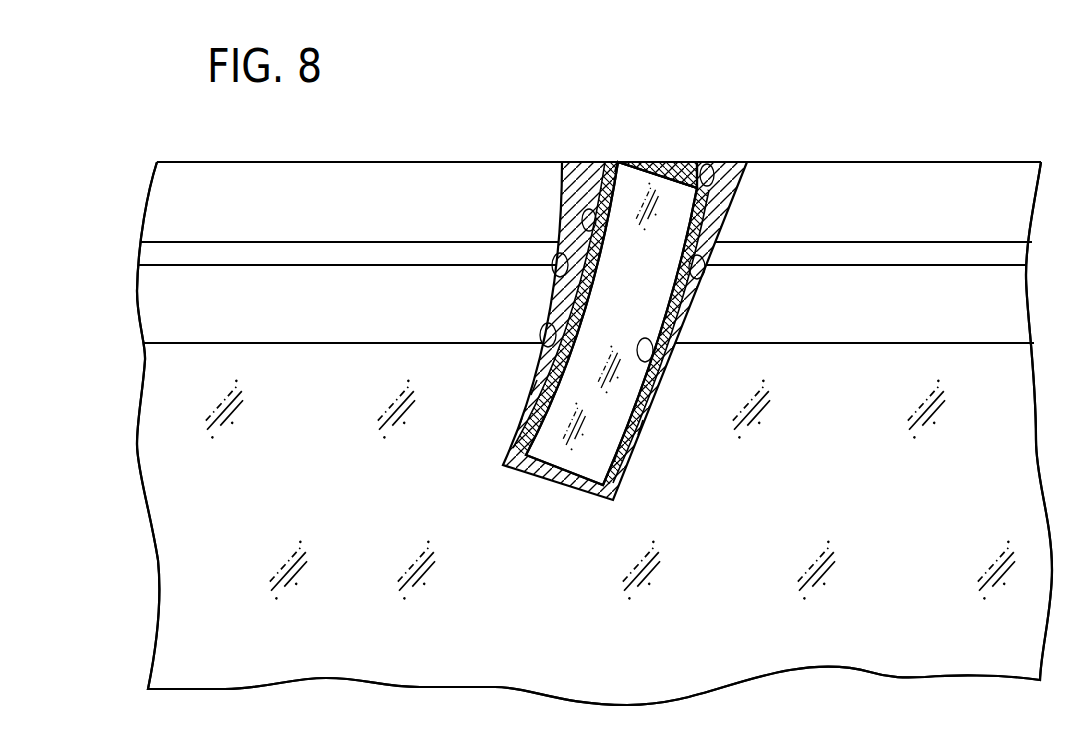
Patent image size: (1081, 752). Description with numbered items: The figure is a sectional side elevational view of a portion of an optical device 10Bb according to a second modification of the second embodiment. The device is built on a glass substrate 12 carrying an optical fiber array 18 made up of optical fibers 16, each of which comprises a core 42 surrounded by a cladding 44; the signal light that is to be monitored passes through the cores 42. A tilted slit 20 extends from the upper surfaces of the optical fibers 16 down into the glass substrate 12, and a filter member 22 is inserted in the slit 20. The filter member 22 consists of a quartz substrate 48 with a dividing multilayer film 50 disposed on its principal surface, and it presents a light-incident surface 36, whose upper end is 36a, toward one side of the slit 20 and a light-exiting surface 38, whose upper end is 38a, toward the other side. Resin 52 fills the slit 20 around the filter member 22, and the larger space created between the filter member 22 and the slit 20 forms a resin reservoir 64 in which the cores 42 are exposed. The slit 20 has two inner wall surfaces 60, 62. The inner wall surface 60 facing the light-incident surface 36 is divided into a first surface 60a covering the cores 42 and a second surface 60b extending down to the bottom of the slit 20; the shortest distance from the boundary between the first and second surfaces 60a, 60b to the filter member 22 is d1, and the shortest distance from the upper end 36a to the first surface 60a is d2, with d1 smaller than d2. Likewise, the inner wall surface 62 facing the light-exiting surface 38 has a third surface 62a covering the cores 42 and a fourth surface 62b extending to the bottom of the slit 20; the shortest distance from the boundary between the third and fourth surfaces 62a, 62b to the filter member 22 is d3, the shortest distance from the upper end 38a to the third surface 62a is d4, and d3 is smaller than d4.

The optical device 10Bb is at (380, 126).
The glass substrate 12 is at (1000, 425).
The optical fiber 16 is at (985, 162).
The optical fiber array 18 is at (873, 160).
The slit 20 is at (643, 420).
The filter member 22 is at (618, 450).
The light-incident surface 36 is at (590, 233).
The upper end of light-incident surface 36a is at (618, 162).
The light-exiting surface 38 is at (705, 208).
The upper end of light-exiting surface 38a is at (697, 162).
The core 42 is at (1000, 254).
The cladding 44 is at (1000, 200).
The quartz substrate 48 is at (573, 465).
The dividing multilayer film 50 is at (522, 423).
The resin 52 is at (537, 387).
The inner wall surface 60 is at (440, 283).
The first surface 60a is at (553, 283).
The second surface 60b is at (548, 325).
The inner wall surface 62 is at (787, 283).
The third surface 62a is at (690, 292).
The fourth surface 62b is at (672, 318).
The resin reservoir 64 is at (578, 230).
The shortest distance d1 is at (603, 312).
The shortest distance d2 is at (559, 197).
The shortest distance d3 is at (637, 313).
The shortest distance d4 is at (740, 162).